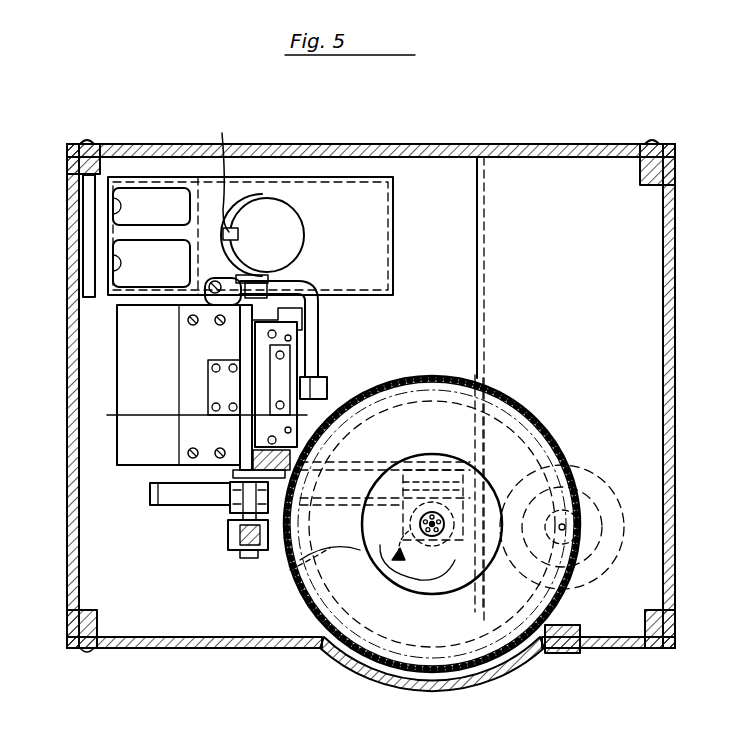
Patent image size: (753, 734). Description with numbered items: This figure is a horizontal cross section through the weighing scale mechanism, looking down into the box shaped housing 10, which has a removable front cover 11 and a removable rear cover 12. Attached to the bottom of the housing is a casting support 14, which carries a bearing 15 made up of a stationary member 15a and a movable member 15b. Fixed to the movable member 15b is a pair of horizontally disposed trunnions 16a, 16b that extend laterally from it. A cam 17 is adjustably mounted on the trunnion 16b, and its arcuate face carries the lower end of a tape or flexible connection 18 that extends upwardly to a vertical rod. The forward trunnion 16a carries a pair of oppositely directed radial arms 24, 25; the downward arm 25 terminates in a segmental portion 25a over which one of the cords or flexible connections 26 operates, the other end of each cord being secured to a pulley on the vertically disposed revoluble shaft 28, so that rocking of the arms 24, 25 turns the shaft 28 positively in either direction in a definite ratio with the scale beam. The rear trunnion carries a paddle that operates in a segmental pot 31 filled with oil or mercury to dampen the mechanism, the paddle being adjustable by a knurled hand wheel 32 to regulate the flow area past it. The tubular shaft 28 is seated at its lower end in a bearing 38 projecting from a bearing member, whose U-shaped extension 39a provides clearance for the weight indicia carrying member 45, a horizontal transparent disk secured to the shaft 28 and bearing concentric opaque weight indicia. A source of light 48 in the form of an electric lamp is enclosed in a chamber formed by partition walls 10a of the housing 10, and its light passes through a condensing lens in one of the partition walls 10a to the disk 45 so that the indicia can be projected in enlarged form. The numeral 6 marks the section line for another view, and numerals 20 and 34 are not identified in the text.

The section line 6- 6 is at (206, 412).
The box shaped housing 10 is at (346, 403).
The partition walls 10a is at (574, 270).
The removable front cover 11 is at (195, 648).
The removable rear cover 12 is at (372, 144).
The casting support 14 is at (117, 362).
The bearing 15 is at (234, 348).
The stationary member 15a is at (230, 388).
The movable member 15b is at (248, 428).
The trunnion 16a is at (240, 522).
The trunnion 16b is at (285, 278).
The cam 17 is at (316, 376).
The tape or flexible connection 18 is at (328, 388).
The pin 20 is at (377, 567).
The radial arm 24 is at (242, 558).
The radial arm 25 is at (228, 514).
The segmental portion 25a is at (150, 495).
The cords or flexible connections 26 is at (302, 565).
The revoluble shaft 28 is at (455, 545).
The segmental pot 31 is at (393, 198).
The knurled hand wheel 32 is at (290, 225).
The wire 34 is at (222, 172).
The bearing 38 is at (440, 537).
The U-shaped extension 39a is at (380, 462).
The weight indicia carrying member 45 is at (520, 400).
The source of light 48 is at (592, 470).